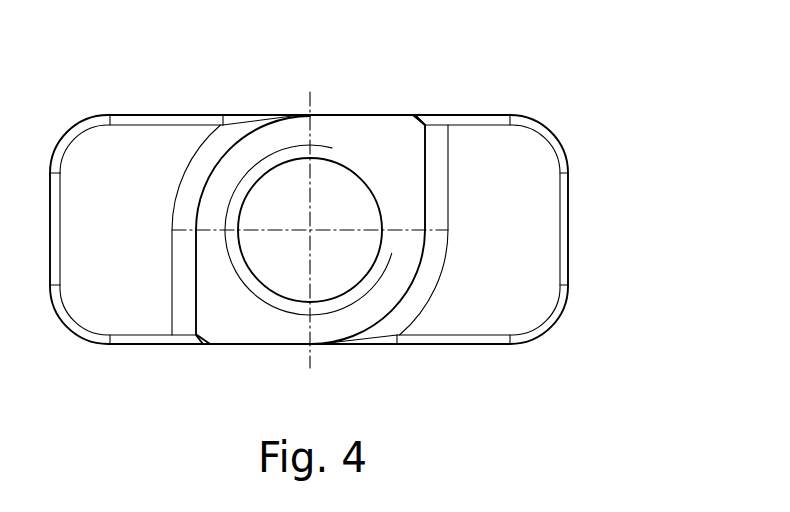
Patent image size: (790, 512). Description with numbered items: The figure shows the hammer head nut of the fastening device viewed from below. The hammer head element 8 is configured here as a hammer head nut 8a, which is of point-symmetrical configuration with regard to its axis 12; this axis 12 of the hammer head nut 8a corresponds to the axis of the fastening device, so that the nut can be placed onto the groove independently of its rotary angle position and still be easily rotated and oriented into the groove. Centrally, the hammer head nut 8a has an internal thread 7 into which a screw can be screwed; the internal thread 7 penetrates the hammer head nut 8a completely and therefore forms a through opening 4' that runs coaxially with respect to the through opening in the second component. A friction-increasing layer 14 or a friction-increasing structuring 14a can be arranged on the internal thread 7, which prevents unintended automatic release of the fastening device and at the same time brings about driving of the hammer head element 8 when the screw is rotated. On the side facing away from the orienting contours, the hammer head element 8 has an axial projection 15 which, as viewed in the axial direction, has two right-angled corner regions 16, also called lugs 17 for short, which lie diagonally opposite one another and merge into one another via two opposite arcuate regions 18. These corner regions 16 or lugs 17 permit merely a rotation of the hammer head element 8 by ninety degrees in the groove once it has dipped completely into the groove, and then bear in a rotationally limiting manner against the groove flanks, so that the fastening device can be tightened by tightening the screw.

The hammer head element 8 is at (356, 192).
The hammer head nut 8a is at (575, 115).
The internal thread 7 is at (345, 170).
The axis 12 is at (310, 233).
The friction-increasing layer 14 is at (326, 180).
The structuring 14a is at (365, 199).
The axial projection 15 is at (412, 198).
The corner regions 16 is at (334, 237).
The lugs 17 is at (413, 115).
The arcuate regions 18 is at (232, 150).
The through opening 4' is at (360, 340).